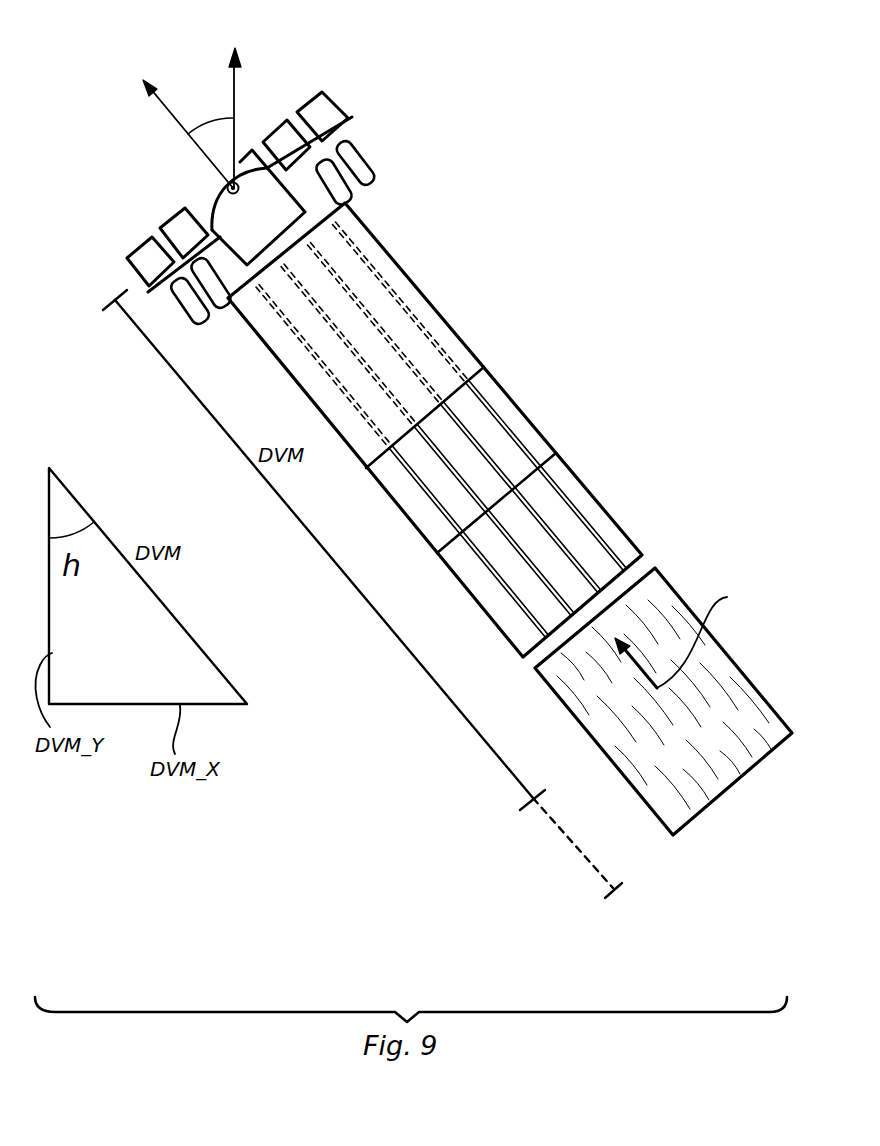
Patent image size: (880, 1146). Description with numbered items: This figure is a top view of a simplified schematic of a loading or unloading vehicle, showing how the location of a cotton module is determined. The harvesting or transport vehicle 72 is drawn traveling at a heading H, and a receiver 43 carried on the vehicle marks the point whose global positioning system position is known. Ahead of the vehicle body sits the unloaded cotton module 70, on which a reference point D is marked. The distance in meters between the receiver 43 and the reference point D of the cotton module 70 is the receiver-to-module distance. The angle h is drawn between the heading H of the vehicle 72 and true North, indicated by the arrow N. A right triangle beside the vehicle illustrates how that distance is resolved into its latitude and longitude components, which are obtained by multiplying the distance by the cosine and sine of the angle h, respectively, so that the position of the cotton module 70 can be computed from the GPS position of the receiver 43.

The receiver 43 is at (228, 185).
The harvesting or transport vehicle 72 is at (518, 205).
The cotton module 70 is at (717, 800).